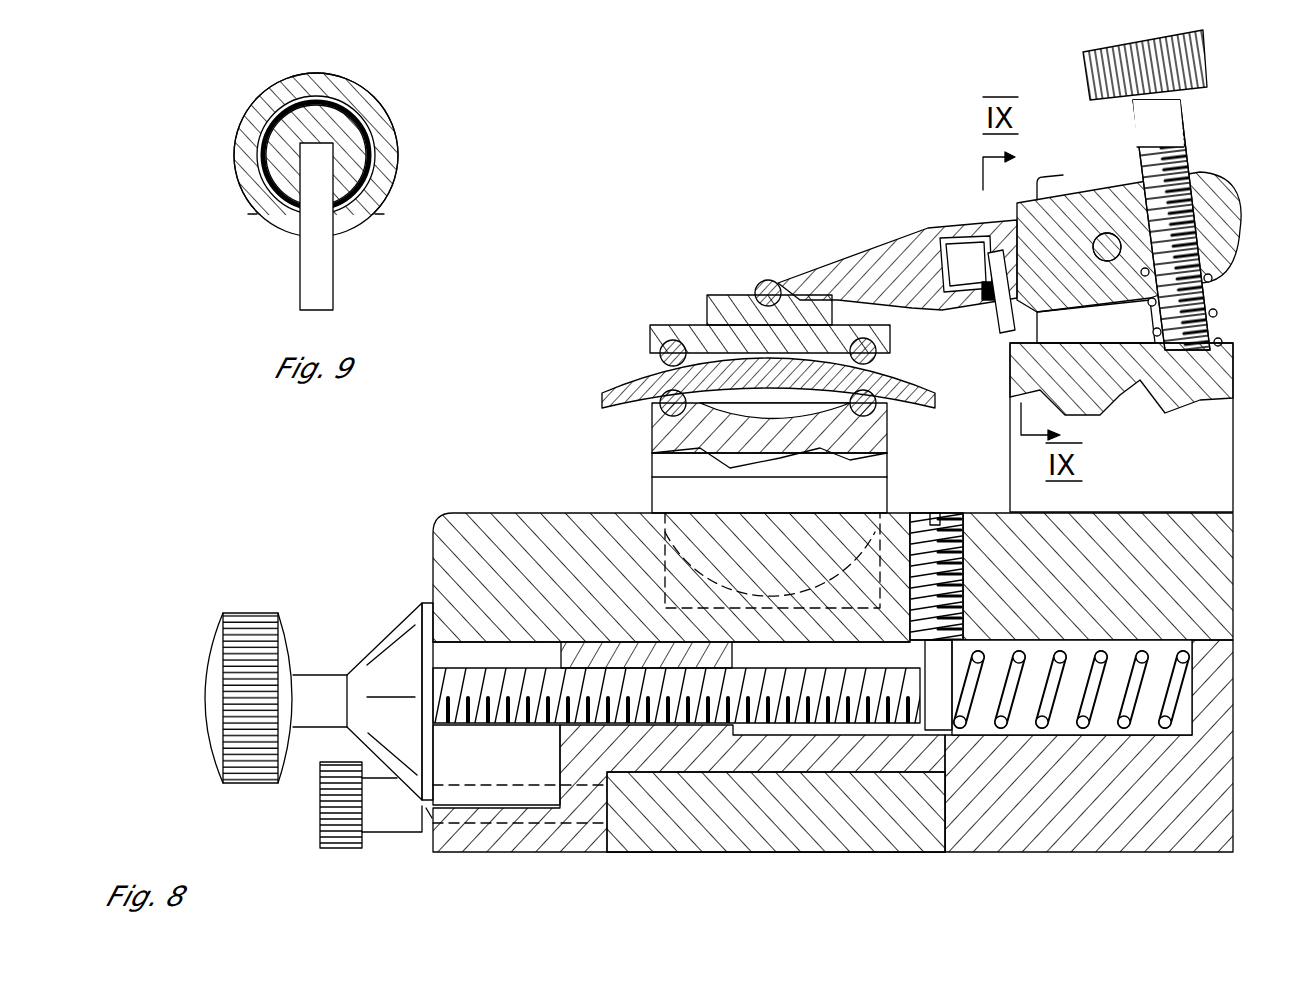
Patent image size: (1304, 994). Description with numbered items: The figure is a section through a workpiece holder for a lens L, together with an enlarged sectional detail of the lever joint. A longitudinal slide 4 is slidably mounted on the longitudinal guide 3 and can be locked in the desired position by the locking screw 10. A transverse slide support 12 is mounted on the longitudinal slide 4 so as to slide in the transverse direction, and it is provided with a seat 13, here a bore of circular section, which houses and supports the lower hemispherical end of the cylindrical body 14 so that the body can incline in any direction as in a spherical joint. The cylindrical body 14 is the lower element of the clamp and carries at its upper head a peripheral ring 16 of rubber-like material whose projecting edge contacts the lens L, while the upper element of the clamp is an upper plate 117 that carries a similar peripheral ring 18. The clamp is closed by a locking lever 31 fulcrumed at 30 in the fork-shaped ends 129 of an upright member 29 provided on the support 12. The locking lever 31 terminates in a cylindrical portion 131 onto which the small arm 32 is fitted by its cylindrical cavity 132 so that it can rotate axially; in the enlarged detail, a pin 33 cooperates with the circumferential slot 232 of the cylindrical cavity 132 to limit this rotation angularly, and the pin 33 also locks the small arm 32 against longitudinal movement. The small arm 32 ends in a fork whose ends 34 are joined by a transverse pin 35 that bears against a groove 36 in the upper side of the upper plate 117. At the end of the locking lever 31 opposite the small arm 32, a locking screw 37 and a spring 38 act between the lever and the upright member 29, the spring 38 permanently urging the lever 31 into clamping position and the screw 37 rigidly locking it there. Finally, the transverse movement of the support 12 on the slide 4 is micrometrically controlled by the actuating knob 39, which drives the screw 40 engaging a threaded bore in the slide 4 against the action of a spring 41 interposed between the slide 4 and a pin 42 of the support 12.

In FIG. 8, the longitudinal guide 3 is at (696, 843).
In FIG. 8, the longitudinal slide 4 is at (1230, 823).
In FIG. 8, the locking screw 10 is at (318, 832).
In FIG. 8, the transverse slide support 12 is at (1233, 556).
In FIG. 8, the seat 13 is at (905, 530).
In FIG. 8, the cylindrical body 14 is at (668, 492).
In FIG. 8, the peripheral ring 16 is at (652, 428).
In FIG. 8, the peripheral ring 18 is at (650, 378).
In FIG. 8, the upright member 29 is at (1233, 416).
In FIG. 8, the fulcrum 30 is at (1108, 262).
In FIG. 8, the locking lever 31 is at (1050, 203).
In FIG. 8, the small arm 32 is at (897, 248).
In FIG. 9, the pin 33 is at (305, 268).
In FIG. 8, the pin 33 is at (1000, 334).
In FIG. 8, the fork ends 34 is at (805, 276).
In FIG. 8, the transverse pin 35 is at (762, 280).
In FIG. 8, the groove 36 is at (730, 292).
In FIG. 8, the locking screw 37 is at (1165, 107).
In FIG. 8, the spring 38 is at (1218, 314).
In FIG. 8, the actuating knob 39 is at (255, 622).
In FIG. 8, the screw 40 is at (488, 718).
In FIG. 8, the spring 41 is at (1175, 697).
In FIG. 8, the pin 42 is at (945, 513).
In FIG. 8, the upper plate 117 is at (707, 310).
In FIG. 8, the fork-shaped ends 129 is at (1083, 178).
In FIG. 9, the cylindrical portion 131 is at (388, 144).
In FIG. 8, the cylindrical portion 131 is at (938, 240).
In FIG. 9, the cylindrical cavity 132 is at (360, 98).
In FIG. 8, the cylindrical cavity 132 is at (946, 232).
In FIG. 9, the circumferential slot 232 is at (355, 225).
In FIG. 8, the circumferential slot 232 is at (994, 298).
In FIG. 8, the lens L is at (935, 400).